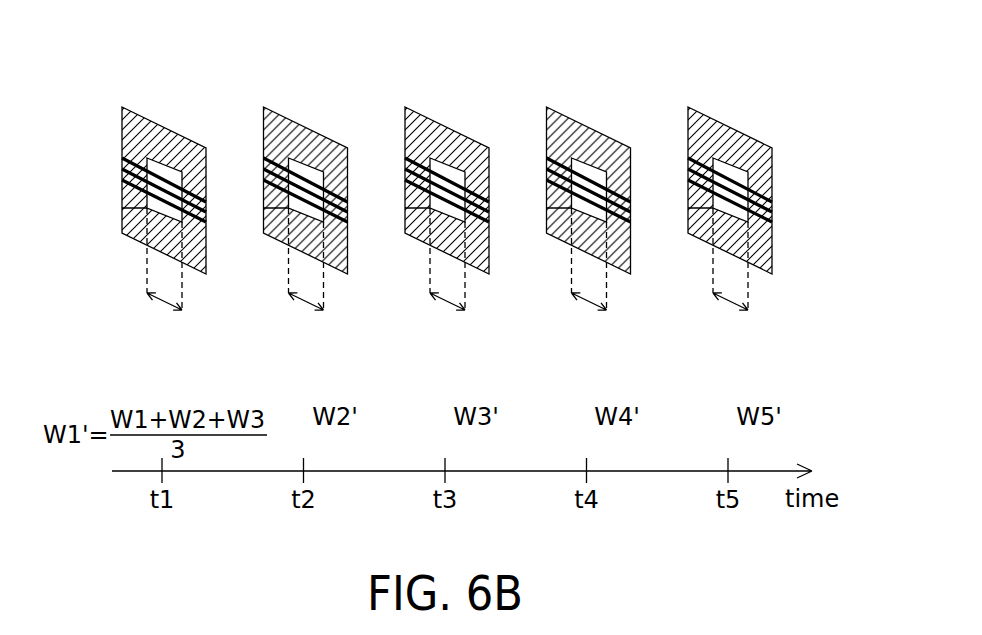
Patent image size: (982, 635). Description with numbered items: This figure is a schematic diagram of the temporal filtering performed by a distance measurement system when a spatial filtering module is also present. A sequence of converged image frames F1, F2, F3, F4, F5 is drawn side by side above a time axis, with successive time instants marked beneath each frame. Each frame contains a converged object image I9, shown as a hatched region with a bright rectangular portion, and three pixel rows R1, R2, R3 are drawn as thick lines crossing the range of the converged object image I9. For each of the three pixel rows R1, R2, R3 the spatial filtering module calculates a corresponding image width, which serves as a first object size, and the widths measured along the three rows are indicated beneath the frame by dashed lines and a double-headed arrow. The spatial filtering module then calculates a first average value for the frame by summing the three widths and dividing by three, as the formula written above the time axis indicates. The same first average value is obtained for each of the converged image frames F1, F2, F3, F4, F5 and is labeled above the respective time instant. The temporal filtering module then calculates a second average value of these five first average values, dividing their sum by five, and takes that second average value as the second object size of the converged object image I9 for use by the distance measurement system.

The converged image frame F1 is at (156, 212).
The converged image frame F2 is at (298, 212).
The converged image frame F3 is at (439, 212).
The converged image frame F4 is at (581, 212).
The converged image frame F5 is at (722, 212).
The pixel row R1 is at (688, 158).
The pixel row R2 is at (688, 169).
The pixel row R3 is at (688, 180).
The converged object image I9 is at (688, 208).